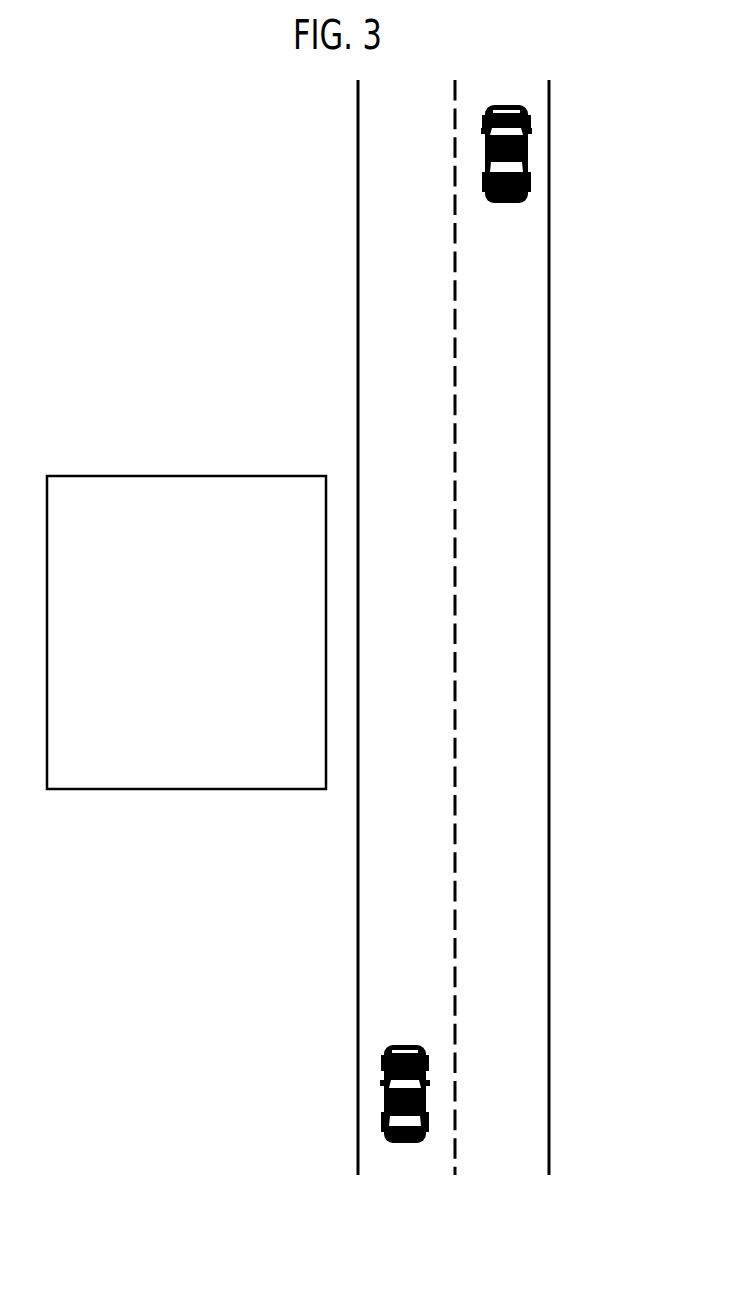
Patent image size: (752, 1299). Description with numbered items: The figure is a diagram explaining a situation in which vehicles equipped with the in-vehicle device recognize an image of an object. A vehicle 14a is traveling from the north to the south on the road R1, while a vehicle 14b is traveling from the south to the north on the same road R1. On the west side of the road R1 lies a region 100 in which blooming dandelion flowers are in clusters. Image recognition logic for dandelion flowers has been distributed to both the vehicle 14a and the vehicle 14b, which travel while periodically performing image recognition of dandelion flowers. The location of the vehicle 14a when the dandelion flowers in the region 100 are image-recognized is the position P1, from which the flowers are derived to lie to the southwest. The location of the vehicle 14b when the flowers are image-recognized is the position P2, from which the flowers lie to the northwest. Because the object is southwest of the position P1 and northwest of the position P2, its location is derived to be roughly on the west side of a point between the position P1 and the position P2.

The vehicle 14a is at (507, 148).
The vehicle 14b is at (382, 1100).
The region 100 is at (182, 790).
The position P1 is at (498, 148).
The position P2 is at (418, 1101).
The road R1 is at (355, 187).